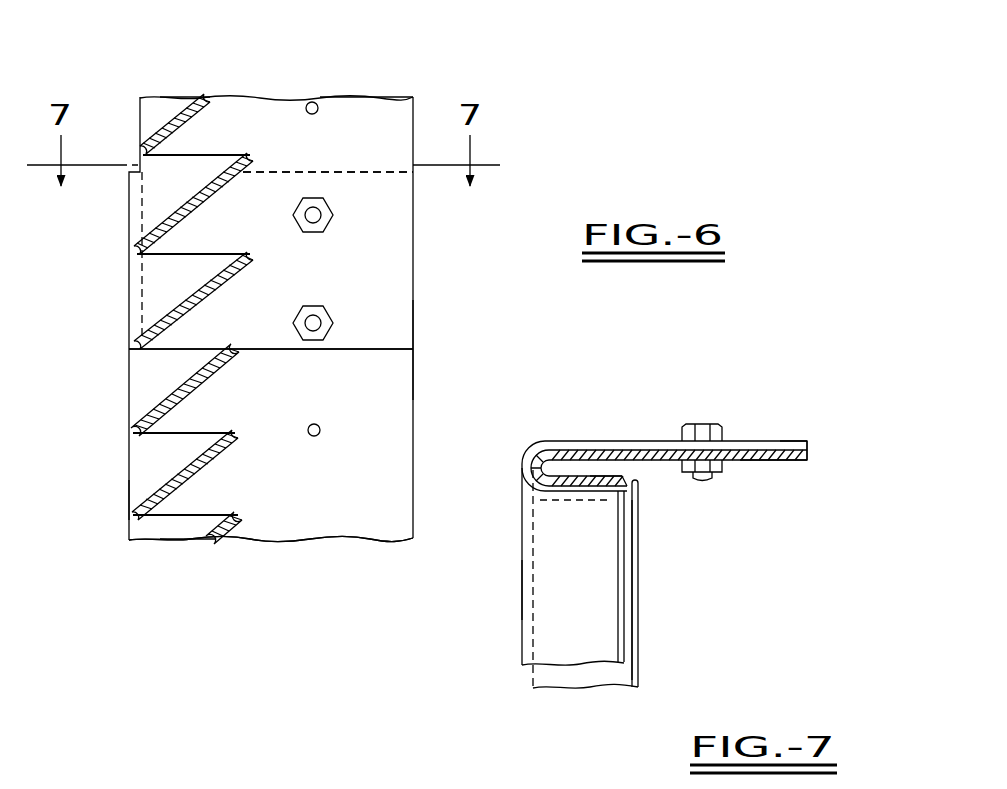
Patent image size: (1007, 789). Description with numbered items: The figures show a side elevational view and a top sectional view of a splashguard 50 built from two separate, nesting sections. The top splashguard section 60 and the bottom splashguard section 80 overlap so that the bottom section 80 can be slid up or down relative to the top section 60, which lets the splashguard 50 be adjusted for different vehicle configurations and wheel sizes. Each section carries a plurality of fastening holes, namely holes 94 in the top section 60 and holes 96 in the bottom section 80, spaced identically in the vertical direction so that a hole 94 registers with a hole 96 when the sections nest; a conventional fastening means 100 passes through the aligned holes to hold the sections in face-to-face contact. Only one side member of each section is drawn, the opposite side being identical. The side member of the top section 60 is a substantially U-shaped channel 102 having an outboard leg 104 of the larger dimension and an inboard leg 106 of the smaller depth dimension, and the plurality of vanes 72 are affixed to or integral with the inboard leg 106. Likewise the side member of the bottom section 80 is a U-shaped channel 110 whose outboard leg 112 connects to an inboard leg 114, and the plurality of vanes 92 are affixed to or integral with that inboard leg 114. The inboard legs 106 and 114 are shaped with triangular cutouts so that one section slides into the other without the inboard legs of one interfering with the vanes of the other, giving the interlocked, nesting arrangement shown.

In FIG. 6, the splashguard 50 is at (435, 342).
In FIG. 7, the splashguard 50 is at (509, 604).
In FIG. 6, the top splashguard section 60 is at (424, 249).
In FIG. 7, the top splashguard section 60 is at (528, 690).
In FIG. 6, the vane member 72 is at (177, 108).
In FIG. 7, the vane member 72 is at (637, 594).
In FIG. 6, the bottom splashguard section 80 is at (426, 399).
In FIG. 7, the bottom splashguard section 80 is at (514, 646).
In FIG. 6, the vanes 92 is at (165, 330).
In FIG. 7, the vanes 92 is at (620, 637).
In FIG. 6, the fastening holes 94 is at (318, 101).
In FIG. 6, the fastening holes 96 is at (320, 436).
In FIG. 6, the fastening means 100 is at (330, 318).
In FIG. 7, the fastening means 100 is at (708, 423).
In FIG. 6, the U-shaped channel 102 is at (183, 88).
In FIG. 7, the U-shaped channel 102 is at (769, 473).
In FIG. 6, the outboard leg 104 is at (353, 106).
In FIG. 7, the outboard leg 104 is at (808, 459).
In FIG. 6, the inboard leg 106 is at (210, 152).
In FIG. 7, the inboard leg 106 is at (630, 476).
In FIG. 6, the U-shaped channel 110 is at (121, 500).
In FIG. 7, the U-shaped channel 110 is at (605, 430).
In FIG. 6, the outboard leg 112 is at (350, 170).
In FIG. 7, the outboard leg 112 is at (808, 441).
In FIG. 6, the inboard leg 114 is at (187, 530).
In FIG. 7, the inboard leg 114 is at (585, 500).